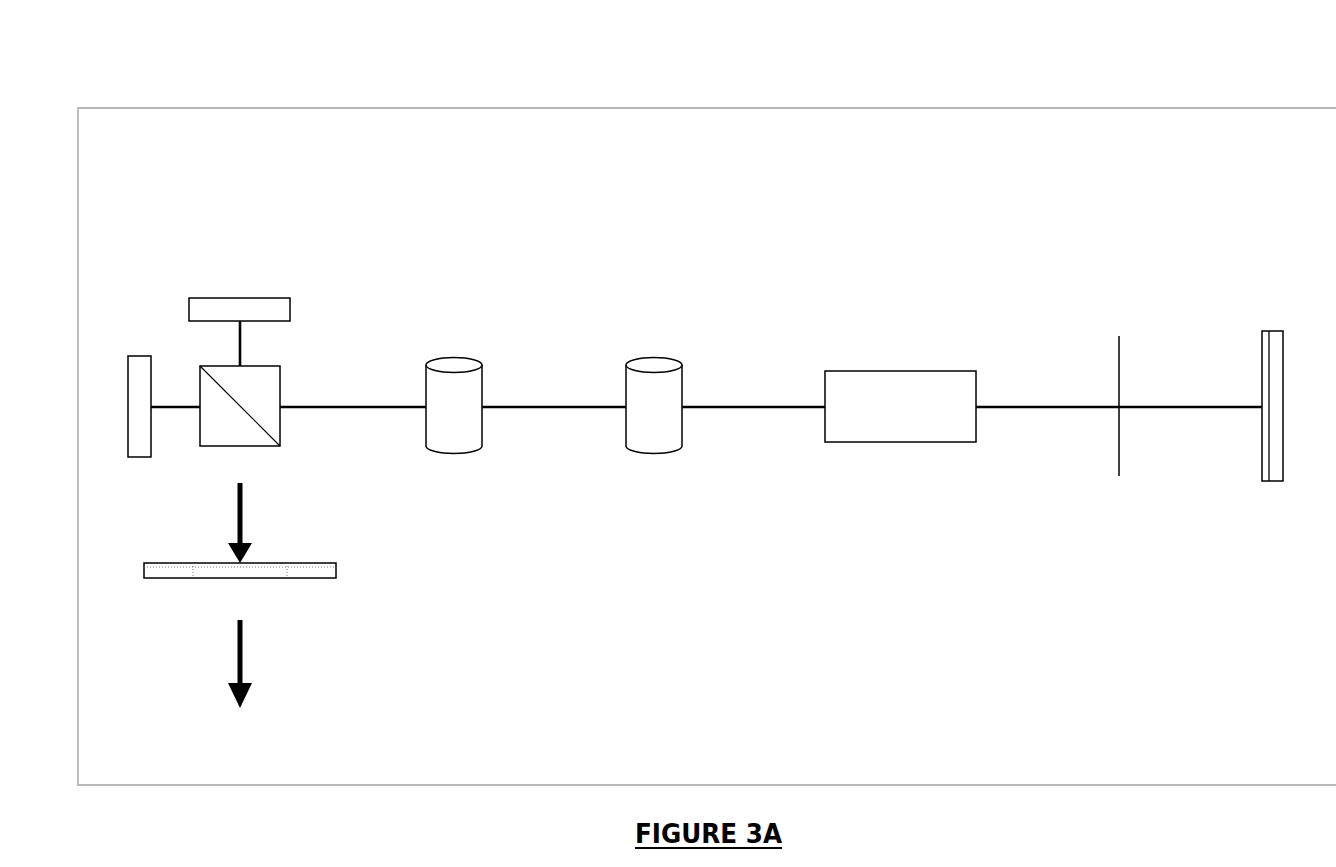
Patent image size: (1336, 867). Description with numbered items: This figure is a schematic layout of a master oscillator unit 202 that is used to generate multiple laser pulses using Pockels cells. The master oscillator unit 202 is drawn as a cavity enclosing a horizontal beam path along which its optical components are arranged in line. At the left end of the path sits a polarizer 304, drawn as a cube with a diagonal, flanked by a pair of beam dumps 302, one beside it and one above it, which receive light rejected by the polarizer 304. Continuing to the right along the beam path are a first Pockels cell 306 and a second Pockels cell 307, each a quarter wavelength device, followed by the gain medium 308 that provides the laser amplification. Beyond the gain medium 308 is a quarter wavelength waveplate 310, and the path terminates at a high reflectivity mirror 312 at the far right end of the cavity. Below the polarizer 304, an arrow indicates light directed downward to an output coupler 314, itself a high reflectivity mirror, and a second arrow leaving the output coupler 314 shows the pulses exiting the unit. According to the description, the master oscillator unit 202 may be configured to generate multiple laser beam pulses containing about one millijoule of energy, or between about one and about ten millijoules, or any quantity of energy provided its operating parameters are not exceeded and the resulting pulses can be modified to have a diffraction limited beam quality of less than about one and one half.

The master oscillator unit 202 is at (707, 102).
The beam dumps 302 is at (133, 347).
The polarizer 304 is at (281, 363).
The first Pockels cell 306 is at (454, 350).
The second Pockels cell 307 is at (650, 350).
The gain medium 308 is at (909, 362).
The quarter wavelength waveplate 310 is at (1123, 327).
The high reflectivity mirror 312 is at (1269, 327).
The output coupler 314 is at (340, 565).